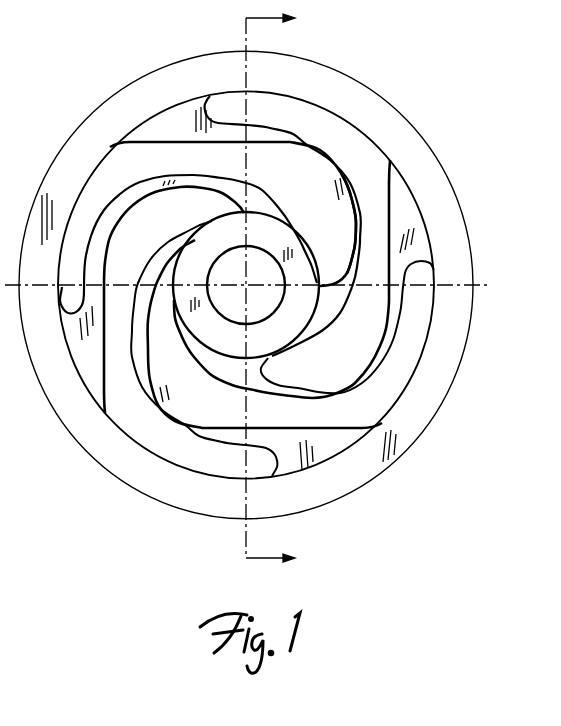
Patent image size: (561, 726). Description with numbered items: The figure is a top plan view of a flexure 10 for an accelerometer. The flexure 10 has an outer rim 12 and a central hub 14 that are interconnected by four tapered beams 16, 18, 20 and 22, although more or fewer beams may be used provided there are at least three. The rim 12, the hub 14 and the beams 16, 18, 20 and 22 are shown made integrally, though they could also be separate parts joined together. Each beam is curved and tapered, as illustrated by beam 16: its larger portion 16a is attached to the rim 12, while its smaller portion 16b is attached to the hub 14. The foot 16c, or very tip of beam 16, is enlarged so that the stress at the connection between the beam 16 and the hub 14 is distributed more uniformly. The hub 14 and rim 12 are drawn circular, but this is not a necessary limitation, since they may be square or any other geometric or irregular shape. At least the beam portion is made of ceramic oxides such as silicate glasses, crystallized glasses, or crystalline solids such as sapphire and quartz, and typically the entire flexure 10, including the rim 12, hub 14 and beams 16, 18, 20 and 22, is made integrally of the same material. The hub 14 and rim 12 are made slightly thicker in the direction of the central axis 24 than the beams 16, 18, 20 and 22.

The flexure 10 is at (444, 32).
The rim 12 is at (426, 124).
The hub 14 is at (198, 330).
The tapered beam 16 is at (310, 196).
The larger portion 16a is at (170, 116).
The smaller portion 16b is at (354, 231).
The foot 16c is at (331, 303).
The tapered beam 18 is at (392, 340).
The tapered beam 20 is at (213, 434).
The tapered beam 22 is at (121, 223).
The axis 24 is at (252, 292).